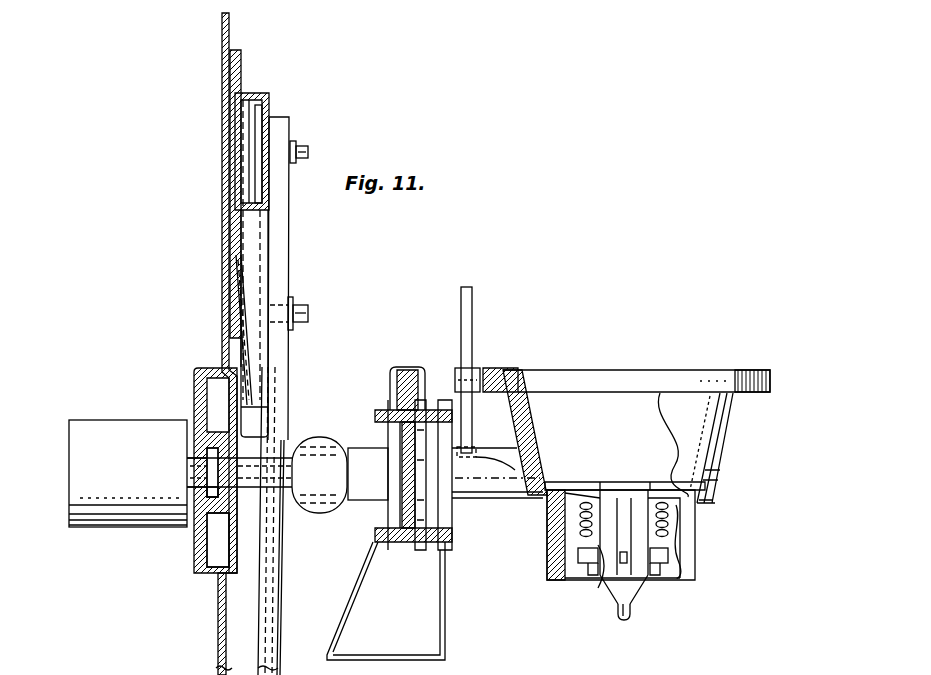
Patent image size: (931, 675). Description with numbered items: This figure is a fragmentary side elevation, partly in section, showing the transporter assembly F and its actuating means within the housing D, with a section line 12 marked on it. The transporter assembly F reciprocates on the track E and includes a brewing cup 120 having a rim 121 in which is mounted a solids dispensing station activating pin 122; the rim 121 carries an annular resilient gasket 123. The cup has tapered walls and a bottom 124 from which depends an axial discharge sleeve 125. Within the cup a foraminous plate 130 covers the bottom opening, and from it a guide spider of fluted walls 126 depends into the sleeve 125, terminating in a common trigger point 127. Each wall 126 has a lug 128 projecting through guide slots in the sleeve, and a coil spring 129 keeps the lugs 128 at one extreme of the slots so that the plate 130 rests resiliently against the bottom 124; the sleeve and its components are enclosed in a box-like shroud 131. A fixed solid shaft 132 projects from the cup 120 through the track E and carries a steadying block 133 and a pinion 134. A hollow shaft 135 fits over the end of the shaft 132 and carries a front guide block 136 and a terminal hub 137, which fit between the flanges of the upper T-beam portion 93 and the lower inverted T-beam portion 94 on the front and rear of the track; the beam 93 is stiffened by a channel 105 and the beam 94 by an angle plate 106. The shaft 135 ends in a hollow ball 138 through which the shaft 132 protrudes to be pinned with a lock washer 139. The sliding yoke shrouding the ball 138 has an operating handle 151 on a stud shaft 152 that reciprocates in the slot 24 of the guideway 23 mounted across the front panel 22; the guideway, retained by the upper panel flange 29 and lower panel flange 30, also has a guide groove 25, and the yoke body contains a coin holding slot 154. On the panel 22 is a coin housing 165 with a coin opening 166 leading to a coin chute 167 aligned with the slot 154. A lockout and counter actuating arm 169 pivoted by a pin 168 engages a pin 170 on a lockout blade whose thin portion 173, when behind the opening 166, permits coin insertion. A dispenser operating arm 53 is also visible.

The section line 12- 12 is at (308, 75).
The front panel 22 is at (222, 176).
The housing D is at (220, 211).
The housing 165 is at (250, 93).
The coin opening 166 is at (240, 123).
The thin portion 173 is at (257, 123).
The pin 170 is at (308, 146).
The lockout and counter actuating arm 169 is at (283, 224).
The coin chute 167 is at (246, 276).
The pivot pin 168 is at (308, 311).
The dispenser operating arm 53 is at (473, 311).
The track E is at (405, 364).
The channel 105 is at (398, 368).
The upper T-beam portion 93 is at (403, 418).
The terminal hub 137 is at (440, 385).
The steadying block 133 is at (447, 518).
The hollow shaft 135 is at (380, 446).
The front guide block 136 is at (390, 544).
The lock washer 139 is at (296, 443).
The solid shaft 132 is at (368, 490).
The upper panel flange 29 is at (237, 418).
The coin holding slot 154 is at (265, 421).
The hollow ball 138 is at (323, 514).
The lower inverted T-beam portion 94 is at (420, 545).
The pinion 134 is at (423, 544).
The transporter assembly F is at (508, 494).
The angle plate 106 is at (446, 601).
The guideway 23 is at (195, 546).
The lower panel flange 30 is at (195, 568).
The slot 24 is at (207, 457).
The guide groove 25 is at (213, 498).
The stud shaft 152 is at (188, 467).
The operating handle 151 is at (82, 467).
The solids dispensing station activating pin 122 is at (478, 368).
The annular resilient gasket 123 is at (520, 372).
The rim 121 is at (772, 381).
The brewing cup 120 is at (722, 466).
The bottom 124 is at (708, 503).
The foraminous plate 130 is at (590, 482).
The shroud 131 is at (695, 572).
The coil spring 129 is at (585, 522).
The lug 128 is at (588, 565).
The fluted walls 126 is at (630, 566).
The axial discharge sleeve 125 is at (600, 568).
The trigger point 127 is at (629, 617).